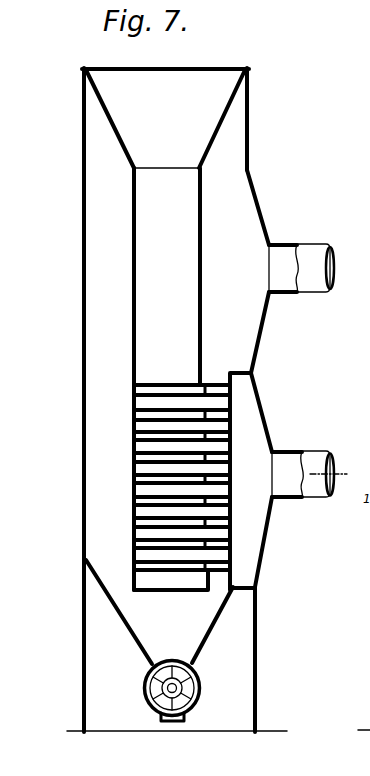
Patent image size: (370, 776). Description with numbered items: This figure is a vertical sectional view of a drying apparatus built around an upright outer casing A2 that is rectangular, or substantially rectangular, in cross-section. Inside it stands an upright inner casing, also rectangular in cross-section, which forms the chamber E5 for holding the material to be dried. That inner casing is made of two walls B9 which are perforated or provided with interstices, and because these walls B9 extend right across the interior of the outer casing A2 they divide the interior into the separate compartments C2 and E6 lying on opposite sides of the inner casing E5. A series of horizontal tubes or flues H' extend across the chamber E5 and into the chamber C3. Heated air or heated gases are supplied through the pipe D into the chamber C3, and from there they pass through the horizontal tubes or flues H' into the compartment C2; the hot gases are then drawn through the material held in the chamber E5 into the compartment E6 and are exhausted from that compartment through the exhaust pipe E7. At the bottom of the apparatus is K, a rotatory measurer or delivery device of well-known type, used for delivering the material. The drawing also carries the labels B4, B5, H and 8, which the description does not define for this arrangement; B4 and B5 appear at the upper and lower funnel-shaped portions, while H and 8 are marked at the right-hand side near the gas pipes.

The upright outer casing A2 is at (250, 147).
The funnel-shaped hopper B4 is at (165, 119).
The lower hopper B5 is at (159, 612).
The perforated wall B9 is at (201, 218).
The compartment C2 is at (92, 275).
The chamber C3 is at (253, 428).
The pipe D is at (310, 457).
The chamber for holding the material to be dried E5 is at (166, 210).
The compartment E6 is at (247, 271).
The exhaust pipe E7 is at (307, 253).
The heating element H is at (362, 562).
The horizontal tube or flue H' is at (154, 481).
The section line 8 is at (58, 476).
The rotatory measurer or delivery device K is at (157, 684).